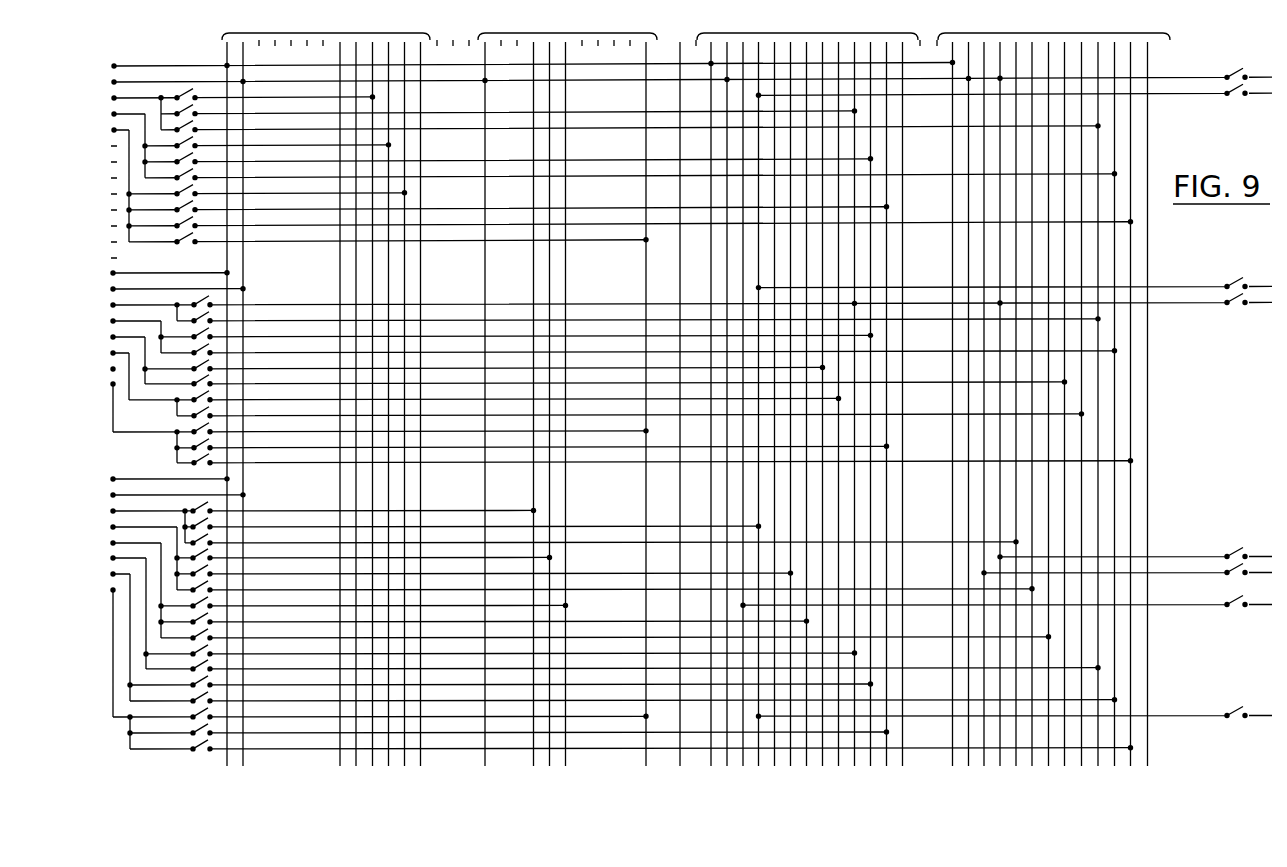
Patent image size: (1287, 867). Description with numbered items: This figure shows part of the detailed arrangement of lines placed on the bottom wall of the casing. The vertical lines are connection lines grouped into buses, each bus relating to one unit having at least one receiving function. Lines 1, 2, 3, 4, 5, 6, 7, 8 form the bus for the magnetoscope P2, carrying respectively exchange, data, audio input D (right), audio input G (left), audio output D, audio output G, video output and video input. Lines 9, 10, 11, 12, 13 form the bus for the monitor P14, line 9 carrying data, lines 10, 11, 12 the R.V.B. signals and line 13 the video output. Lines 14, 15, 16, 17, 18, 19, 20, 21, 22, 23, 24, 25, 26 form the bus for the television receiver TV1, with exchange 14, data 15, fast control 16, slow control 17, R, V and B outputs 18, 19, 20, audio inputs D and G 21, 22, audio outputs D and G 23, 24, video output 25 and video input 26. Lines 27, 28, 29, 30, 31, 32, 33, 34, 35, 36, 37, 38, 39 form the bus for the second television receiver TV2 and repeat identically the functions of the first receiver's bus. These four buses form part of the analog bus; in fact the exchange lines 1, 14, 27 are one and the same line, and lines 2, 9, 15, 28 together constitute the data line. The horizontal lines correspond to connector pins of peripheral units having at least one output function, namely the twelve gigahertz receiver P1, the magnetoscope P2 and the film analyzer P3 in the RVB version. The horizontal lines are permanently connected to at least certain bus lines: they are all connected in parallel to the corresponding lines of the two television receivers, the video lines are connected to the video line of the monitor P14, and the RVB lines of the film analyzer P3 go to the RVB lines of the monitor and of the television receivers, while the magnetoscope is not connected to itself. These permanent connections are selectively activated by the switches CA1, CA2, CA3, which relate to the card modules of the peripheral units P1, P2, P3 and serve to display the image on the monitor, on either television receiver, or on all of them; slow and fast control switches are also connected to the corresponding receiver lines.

The exchange line 1 is at (227, 416).
The data line 2 is at (243, 416).
The audio input D (right) line 3 is at (340, 416).
The audio input G (left) line 4 is at (356, 416).
The audio output D line 5 is at (372, 416).
The audio output G line 6 is at (388, 416).
The video output line 7 is at (404, 416).
The video input line 8 is at (420, 416).
The data line 9 is at (485, 416).
The R line 10 is at (533, 416).
The V line 11 is at (549, 416).
The B line 12 is at (565, 416).
The video output line 13 is at (646, 416).
The exchange line 14 is at (711, 416).
The data line 15 is at (727, 416).
The fast control line 16 is at (743, 416).
The slow control line 17 is at (758, 416).
The R output line 18 is at (774, 416).
The V output line 19 is at (790, 416).
The B output line 20 is at (806, 416).
The audio input D line 21 is at (822, 416).
The audio input G line 22 is at (838, 416).
The audio output D line 23 is at (854, 416).
The audio output G line 24 is at (870, 416).
The video output line 25 is at (886, 416).
The video input line 26 is at (902, 416).
The exchange line 27 is at (952, 416).
The data line 28 is at (968, 416).
The fast control line 29 is at (984, 416).
The slow control line 30 is at (1000, 416).
The R output line 31 is at (1016, 416).
The V output line 32 is at (1032, 416).
The B output line 33 is at (1048, 416).
The audio input D line 34 is at (1064, 416).
The audio input G line 35 is at (1081, 416).
The audio output D line 36 is at (1098, 416).
The audio output G line 37 is at (1114, 416).
The video output line 38 is at (1130, 416).
The video input line 39 is at (1147, 416).
The 12 GHz receiver P1 is at (111, 60).
The magnetoscope P2 is at (111, 270).
The film analyzer P3 is at (111, 478).
The switch CA1 is at (185, 251).
The switch CA2 is at (164, 444).
The switch CA3 is at (198, 763).
The monitor P14 is at (567, 25).
The television receiver TV1 is at (807, 25).
The television receiver TV2 is at (1054, 25).